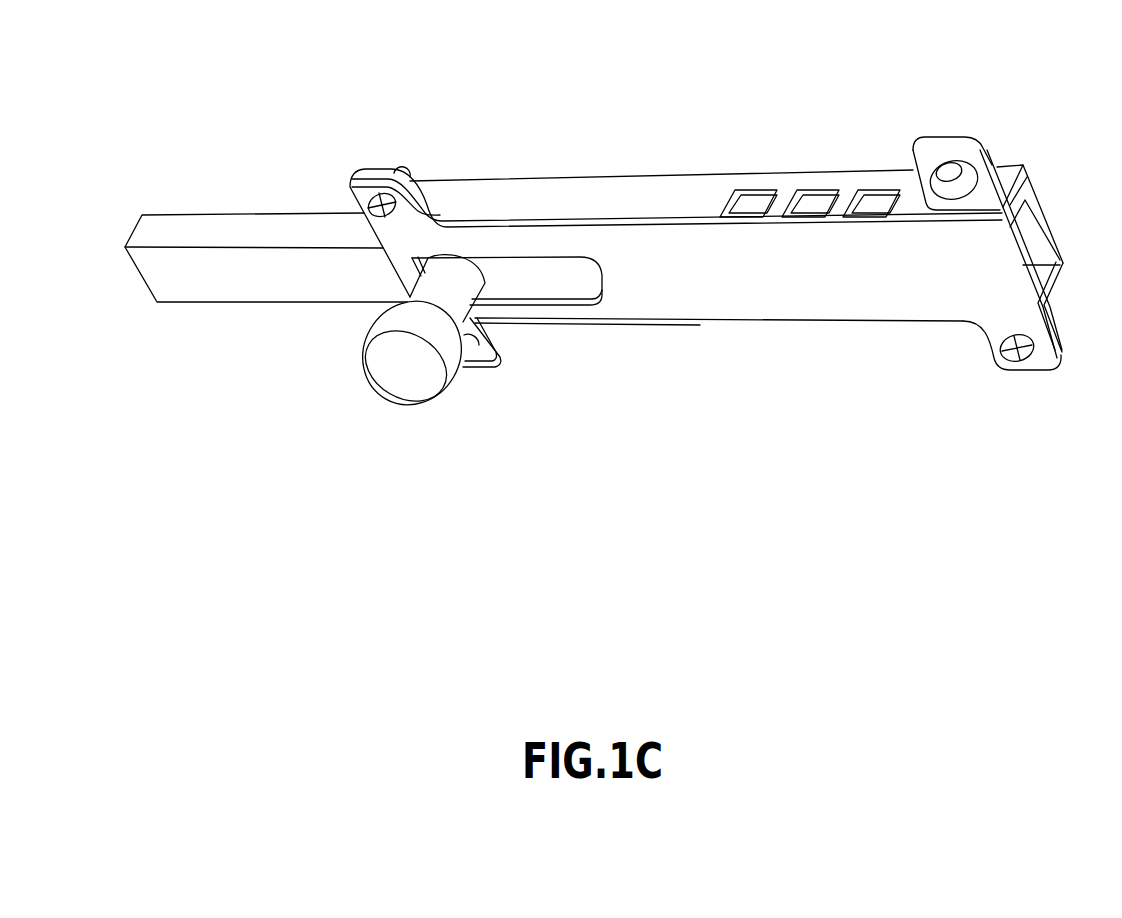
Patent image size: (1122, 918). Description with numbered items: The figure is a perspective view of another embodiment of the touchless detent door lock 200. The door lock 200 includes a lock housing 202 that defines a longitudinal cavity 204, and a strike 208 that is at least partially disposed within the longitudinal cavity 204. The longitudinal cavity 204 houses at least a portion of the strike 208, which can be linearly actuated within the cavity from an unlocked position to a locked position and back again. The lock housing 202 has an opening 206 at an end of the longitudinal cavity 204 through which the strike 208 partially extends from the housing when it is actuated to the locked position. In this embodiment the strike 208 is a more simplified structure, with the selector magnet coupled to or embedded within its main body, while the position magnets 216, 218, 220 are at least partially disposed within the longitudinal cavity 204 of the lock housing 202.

The touchless detent door lock 200 is at (250, 60).
The lock housing 202 is at (747, 305).
The longitudinal cavity 204 is at (1030, 242).
The opening 206 is at (393, 277).
The strike 208 is at (236, 228).
The position magnet 216 is at (877, 202).
The position magnet 218 is at (812, 203).
The position magnet 220 is at (747, 203).